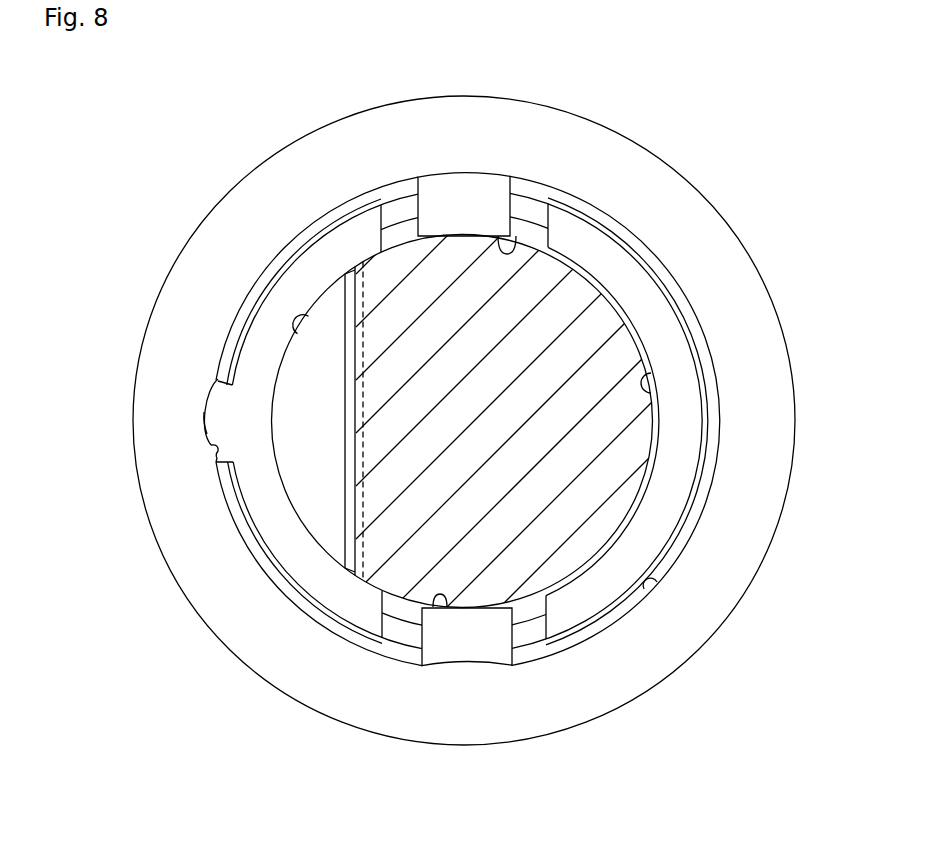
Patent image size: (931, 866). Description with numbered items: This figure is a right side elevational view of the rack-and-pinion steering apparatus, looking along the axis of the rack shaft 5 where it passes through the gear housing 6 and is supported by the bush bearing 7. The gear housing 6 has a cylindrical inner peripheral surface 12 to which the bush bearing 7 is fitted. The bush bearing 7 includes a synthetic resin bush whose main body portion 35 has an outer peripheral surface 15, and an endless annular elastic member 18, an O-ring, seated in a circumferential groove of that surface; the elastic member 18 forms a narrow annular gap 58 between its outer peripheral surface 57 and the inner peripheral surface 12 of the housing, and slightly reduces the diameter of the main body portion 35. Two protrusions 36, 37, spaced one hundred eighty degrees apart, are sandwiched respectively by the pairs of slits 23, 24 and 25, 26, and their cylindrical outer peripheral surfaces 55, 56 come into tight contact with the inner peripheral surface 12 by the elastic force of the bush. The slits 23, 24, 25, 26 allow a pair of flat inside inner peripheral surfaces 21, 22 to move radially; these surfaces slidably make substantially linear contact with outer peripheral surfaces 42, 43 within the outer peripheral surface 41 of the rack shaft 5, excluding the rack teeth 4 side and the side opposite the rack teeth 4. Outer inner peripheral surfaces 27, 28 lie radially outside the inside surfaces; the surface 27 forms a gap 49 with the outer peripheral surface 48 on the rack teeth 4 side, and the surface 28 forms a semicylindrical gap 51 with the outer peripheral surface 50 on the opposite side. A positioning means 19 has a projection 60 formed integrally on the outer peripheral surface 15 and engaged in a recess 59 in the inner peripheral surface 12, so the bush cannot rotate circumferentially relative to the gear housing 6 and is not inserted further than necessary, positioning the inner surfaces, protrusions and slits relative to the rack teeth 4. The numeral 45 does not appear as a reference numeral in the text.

The rack teeth 4 is at (349, 452).
The rack shaft 5 is at (586, 498).
The gear housing 6 is at (293, 160).
The bush bearing 7 is at (630, 247).
The inner peripheral surface 12 is at (648, 592).
The outer peripheral surface 15 is at (237, 350).
The endless annular elastic member 18 is at (273, 580).
The positioning means 19 is at (194, 404).
The inside inner peripheral surface 21 is at (515, 250).
The inside inner peripheral surface 22 is at (424, 612).
The slit 23 is at (520, 205).
The slit 24 is at (395, 212).
The slit 25 is at (530, 633).
The slit 26 is at (402, 613).
The outer inner peripheral surface 27 is at (343, 317).
The outer inner peripheral surface 28 is at (657, 390).
The main body portion 35 is at (597, 590).
The protrusion 36 is at (487, 185).
The protrusion 37 is at (492, 642).
The outer peripheral surface 41 is at (657, 420).
The outer peripheral surface 42 is at (465, 236).
The outer peripheral surface 43 is at (468, 610).
The ring gap 45 is at (667, 343).
The outer peripheral surface 48 is at (308, 315).
The gap 49 is at (320, 513).
The outer peripheral surface 50 is at (658, 448).
The semicylindrical gap 51 is at (595, 280).
The outer peripheral surface 55 is at (435, 177).
The outer peripheral surface 56 is at (450, 672).
The outer peripheral surface 57 is at (680, 308).
The annular gap 58 is at (318, 617).
The recess 59 is at (213, 452).
The projection 60 is at (204, 423).